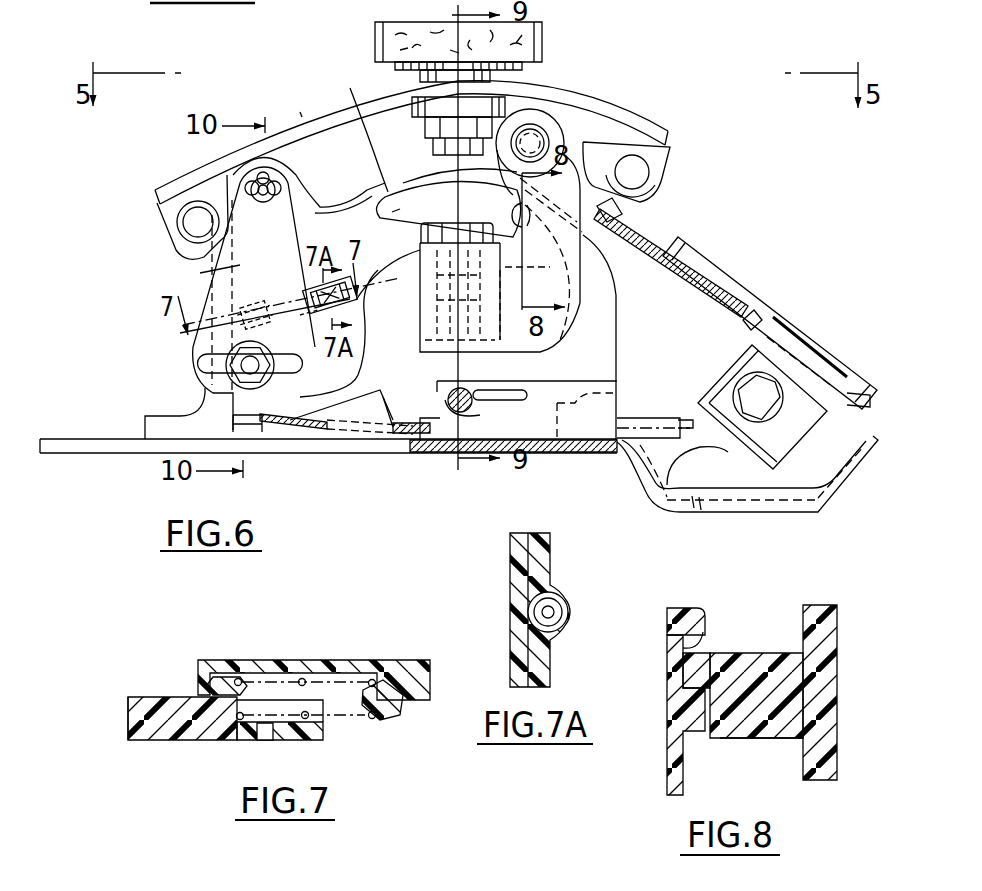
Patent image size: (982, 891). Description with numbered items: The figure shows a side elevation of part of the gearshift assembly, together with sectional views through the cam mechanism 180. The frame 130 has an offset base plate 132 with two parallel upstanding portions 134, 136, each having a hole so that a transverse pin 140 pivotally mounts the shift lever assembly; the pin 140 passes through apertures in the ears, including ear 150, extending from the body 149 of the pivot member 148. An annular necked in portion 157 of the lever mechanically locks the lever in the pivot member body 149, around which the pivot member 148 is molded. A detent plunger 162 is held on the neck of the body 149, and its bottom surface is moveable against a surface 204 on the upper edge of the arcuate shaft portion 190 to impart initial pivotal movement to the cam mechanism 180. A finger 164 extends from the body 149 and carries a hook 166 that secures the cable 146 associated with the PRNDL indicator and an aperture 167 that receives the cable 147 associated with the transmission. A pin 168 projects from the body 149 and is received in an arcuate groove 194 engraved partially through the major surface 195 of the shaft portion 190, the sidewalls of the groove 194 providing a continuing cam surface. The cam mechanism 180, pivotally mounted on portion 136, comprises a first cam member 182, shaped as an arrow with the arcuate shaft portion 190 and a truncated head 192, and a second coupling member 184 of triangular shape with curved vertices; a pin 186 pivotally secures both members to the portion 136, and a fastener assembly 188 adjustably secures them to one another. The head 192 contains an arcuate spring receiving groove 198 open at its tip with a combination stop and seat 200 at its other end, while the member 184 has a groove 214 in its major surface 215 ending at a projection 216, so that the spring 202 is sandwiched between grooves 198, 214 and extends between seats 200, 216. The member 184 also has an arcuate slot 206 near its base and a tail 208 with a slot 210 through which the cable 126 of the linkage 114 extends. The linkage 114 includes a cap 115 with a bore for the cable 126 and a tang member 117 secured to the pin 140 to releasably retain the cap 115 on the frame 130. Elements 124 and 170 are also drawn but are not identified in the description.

In FIG. 6, the linkage 114 is at (640, 416).
In FIG. 6, the cap 115 is at (550, 380).
In FIG. 6, the tang member 117 is at (442, 388).
In FIG. 6, the channel member 124 is at (672, 446).
In FIG. 6, the cable 126 is at (384, 478).
In FIG. 6, the frame 130 is at (110, 455).
In FIG. 6, the base plate 132 is at (428, 456).
In FIG. 6, the upstanding portion 134 is at (364, 452).
In FIG. 6, the upstanding portion 136 is at (185, 252).
In FIG. 6, the transverse pin 140 is at (478, 405).
In FIG. 6, the cable 146 is at (729, 302).
In FIG. 6, the cable 147 is at (708, 263).
In FIG. 6, the pivot member 148 is at (586, 313).
In FIG. 8, the pivot member 148 is at (777, 650).
In FIG. 8, the body 149 is at (753, 730).
In FIG. 6, the ear 150 is at (420, 356).
In FIG. 6, the annular necked in portion 157 is at (413, 256).
In FIG. 6, the detent plunger 162 is at (405, 112).
In FIG. 6, the finger 164 is at (641, 127).
In FIG. 6, the hook 166 is at (622, 212).
In FIG. 6, the aperture 167 is at (539, 132).
In FIG. 6, the pin 168 is at (506, 215).
In FIG. 8, the pin 168 is at (690, 672).
In FIG. 6, the arm 170 is at (329, 110).
In FIG. 6, the cam mechanism 180 is at (313, 188).
In FIG. 6, the first cam member 182 is at (342, 199).
In FIG. 7, the first cam member 182 is at (393, 655).
In FIG. 7A, the first cam member 182 is at (554, 535).
In FIG. 8, the first cam member 182 is at (666, 748).
In FIG. 6, the second coupling member 184 is at (212, 270).
In FIG. 7, the second coupling member 184 is at (162, 742).
In FIG. 6, the pin 186 is at (250, 185).
In FIG. 6, the fastener assembly 188 is at (221, 393).
In FIG. 6, the arcuate shaft portion 190 is at (369, 305).
In FIG. 6, the truncated head 192 is at (320, 385).
In FIG. 6, the arcuate groove 194 is at (393, 198).
In FIG. 8, the arcuate groove 194 is at (704, 643).
In FIG. 6, the major surface 195 is at (370, 225).
In FIG. 7, the major surface 195 is at (386, 720).
In FIG. 6, the arcuate spring receiving groove 198 is at (241, 252).
In FIG. 7, the arcuate spring receiving groove 198 is at (266, 670).
In FIG. 6, the combination stop and seat 200 is at (362, 297).
In FIG. 7A, the combination stop and seat 200 is at (564, 592).
In FIG. 6, the spring 202 is at (310, 323).
In FIG. 7, the spring 202 is at (339, 713).
In FIG. 7A, the spring 202 is at (560, 615).
In FIG. 6, the surface 204 is at (347, 87).
In FIG. 8, the surface 204 is at (688, 609).
In FIG. 6, the arcuate slot 206 is at (205, 360).
In FIG. 6, the tail 208 is at (268, 406).
In FIG. 6, the slot 210 is at (278, 452).
In FIG. 7, the groove 214 is at (273, 722).
In FIG. 7, the major surface 215 is at (140, 698).
In FIG. 6, the projection 216 is at (250, 306).
In FIG. 7, the projection 216 is at (232, 691).